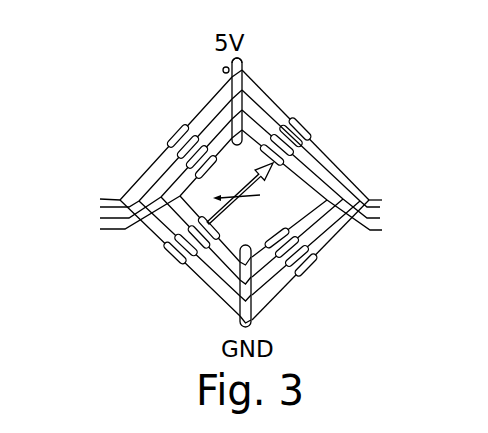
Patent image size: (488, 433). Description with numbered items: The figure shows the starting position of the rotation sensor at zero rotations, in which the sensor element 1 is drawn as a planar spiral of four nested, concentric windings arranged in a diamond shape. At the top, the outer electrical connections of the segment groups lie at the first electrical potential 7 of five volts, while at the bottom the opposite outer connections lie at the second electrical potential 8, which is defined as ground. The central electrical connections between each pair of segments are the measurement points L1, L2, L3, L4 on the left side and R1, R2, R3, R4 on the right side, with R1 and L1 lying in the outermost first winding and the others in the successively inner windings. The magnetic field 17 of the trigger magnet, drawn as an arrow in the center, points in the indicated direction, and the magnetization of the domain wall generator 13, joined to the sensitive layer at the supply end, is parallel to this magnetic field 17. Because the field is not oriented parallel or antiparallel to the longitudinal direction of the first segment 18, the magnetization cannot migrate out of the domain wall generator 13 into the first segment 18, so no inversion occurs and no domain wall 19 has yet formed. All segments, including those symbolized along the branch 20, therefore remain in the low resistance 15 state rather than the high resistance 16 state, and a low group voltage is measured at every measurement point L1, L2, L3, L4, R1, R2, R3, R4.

The sensor element 1 is at (152, 118).
The domain wall generator 13 is at (223, 69).
The domain wall 19 is at (238, 58).
The first electrical potential 7 is at (242, 65).
The low resistance 15 is at (302, 118).
The first segment 18 is at (342, 160).
The bridge branch 20 is at (334, 236).
The high resistance 16 is at (306, 266).
The second electrical potential 8 is at (239, 318).
The magnetic field 17 is at (238, 205).
The central electrical connection L1 is at (120, 199).
The central electrical connection L2 is at (129, 207).
The central electrical connection L3 is at (129, 218).
The central electrical connection L4 is at (125, 229).
The central electrical connection R1 is at (369, 200).
The central electrical connection R2 is at (367, 207).
The central electrical connection R3 is at (367, 218).
The central electrical connection R4 is at (370, 230).